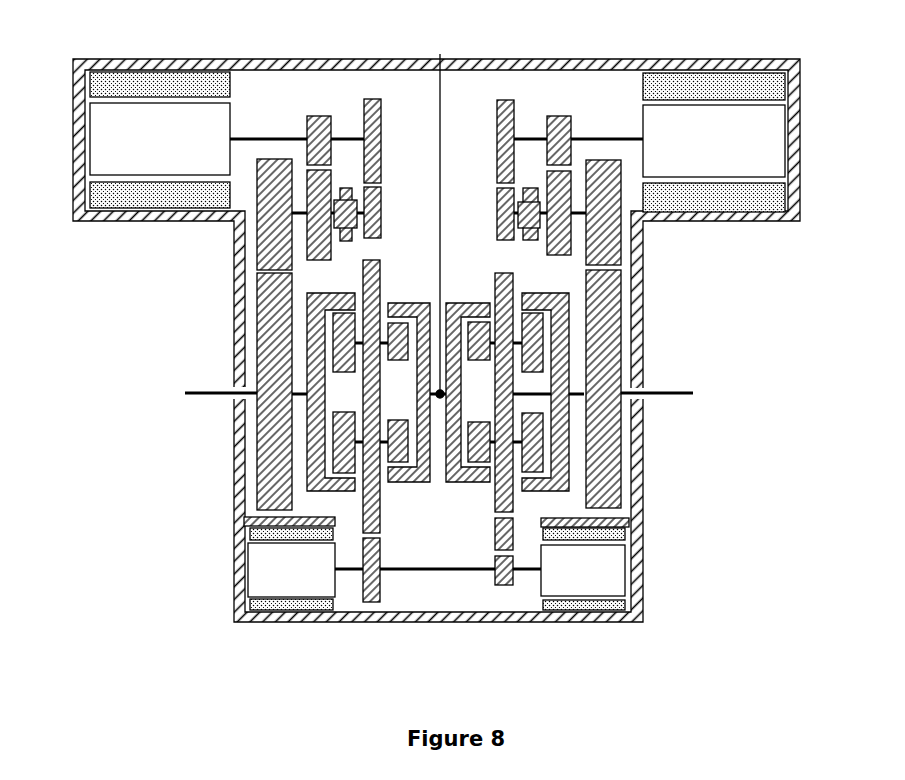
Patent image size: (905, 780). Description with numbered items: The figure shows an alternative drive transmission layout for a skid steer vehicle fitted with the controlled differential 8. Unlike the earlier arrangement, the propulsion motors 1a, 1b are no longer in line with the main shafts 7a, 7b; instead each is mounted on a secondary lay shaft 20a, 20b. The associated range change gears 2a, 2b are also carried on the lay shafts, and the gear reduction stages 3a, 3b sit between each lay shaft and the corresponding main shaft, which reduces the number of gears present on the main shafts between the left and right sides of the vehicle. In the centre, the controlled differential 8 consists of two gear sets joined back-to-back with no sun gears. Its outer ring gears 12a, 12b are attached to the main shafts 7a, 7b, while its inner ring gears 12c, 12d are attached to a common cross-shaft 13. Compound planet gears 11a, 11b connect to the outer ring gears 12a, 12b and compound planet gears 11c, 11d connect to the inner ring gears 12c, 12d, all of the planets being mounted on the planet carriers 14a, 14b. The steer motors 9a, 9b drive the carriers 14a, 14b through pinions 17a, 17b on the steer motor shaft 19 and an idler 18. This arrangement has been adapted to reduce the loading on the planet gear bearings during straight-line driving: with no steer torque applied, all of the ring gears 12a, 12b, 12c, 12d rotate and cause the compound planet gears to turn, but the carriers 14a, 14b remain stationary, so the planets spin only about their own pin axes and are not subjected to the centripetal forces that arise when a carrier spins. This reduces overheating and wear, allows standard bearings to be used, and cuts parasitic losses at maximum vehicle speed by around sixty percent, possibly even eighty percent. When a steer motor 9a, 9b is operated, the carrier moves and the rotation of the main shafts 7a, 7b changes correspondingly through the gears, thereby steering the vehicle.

The propulsion motor 1a is at (157, 139).
The propulsion motor 1b is at (727, 139).
The secondary lay shaft 20a is at (282, 139).
The secondary lay shaft 20b is at (612, 139).
The range change gear 2a is at (372, 160).
The range change gear 2b is at (505, 164).
The cross-shaft 13 is at (440, 217).
The gear reduction stage 3a is at (272, 373).
The gear reduction stage 3b is at (603, 366).
The main shaft 7a is at (212, 393).
The main shaft 7b is at (661, 393).
The outer ring gear 12a is at (313, 302).
The outer ring gear 12b is at (558, 303).
The inner ring gear 12c is at (423, 405).
The inner ring gear 12d is at (453, 404).
The compound planet gear 11a is at (343, 442).
The compound planet gear 11b is at (529, 444).
The compound planet gear 11c is at (395, 340).
The compound planet gear 11d is at (476, 343).
The planet carrier 14a is at (370, 508).
The planet carrier 14b is at (506, 494).
The pinion 17a is at (370, 559).
The pinion 17b is at (506, 567).
The idler 18 is at (506, 534).
The steer motor 9a is at (280, 571).
The steer motor 9b is at (588, 574).
The steer motor shaft 19 is at (444, 569).
The controlled differential 8 is at (432, 493).